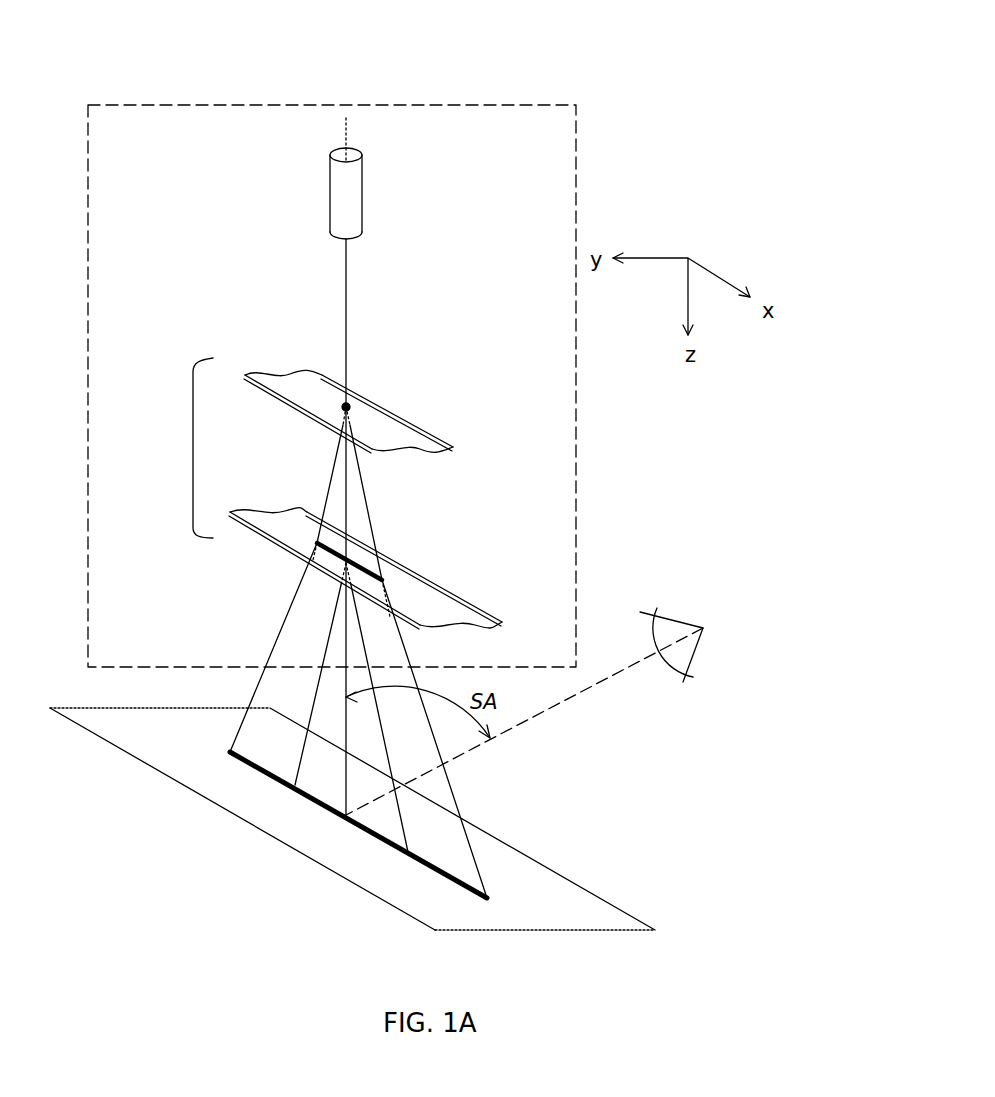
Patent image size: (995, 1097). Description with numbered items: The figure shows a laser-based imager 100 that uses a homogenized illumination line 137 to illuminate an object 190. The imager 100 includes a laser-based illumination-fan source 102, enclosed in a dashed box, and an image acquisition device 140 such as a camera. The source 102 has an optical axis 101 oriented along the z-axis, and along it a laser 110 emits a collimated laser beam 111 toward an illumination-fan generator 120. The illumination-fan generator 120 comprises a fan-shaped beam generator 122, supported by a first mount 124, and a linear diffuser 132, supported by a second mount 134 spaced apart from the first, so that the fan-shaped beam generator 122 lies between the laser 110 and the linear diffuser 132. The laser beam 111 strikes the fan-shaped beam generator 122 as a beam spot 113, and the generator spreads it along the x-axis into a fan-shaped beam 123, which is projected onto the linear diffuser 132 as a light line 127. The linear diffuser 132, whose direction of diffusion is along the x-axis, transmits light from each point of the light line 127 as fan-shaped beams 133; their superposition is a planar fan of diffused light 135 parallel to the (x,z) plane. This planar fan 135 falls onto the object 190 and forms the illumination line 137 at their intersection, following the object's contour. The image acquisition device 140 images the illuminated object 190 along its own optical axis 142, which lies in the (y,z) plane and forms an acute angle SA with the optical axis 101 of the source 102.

The laser-based imager 100 is at (198, 80).
The laser-based illumination-fan source 102 is at (134, 136).
The optical axis 101 is at (346, 135).
The laser 110 is at (365, 188).
The collimated laser beam 111 is at (346, 307).
The beam spot 113 is at (347, 405).
The illumination-fan generator 120 is at (326, 493).
The fan-shaped beam generator 122 is at (364, 406).
The first mount 124 is at (387, 406).
The fan-shaped beam 123 is at (320, 487).
The light line 127 is at (378, 565).
The linear diffuser 132 is at (382, 568).
The second mount 134 is at (450, 590).
The fan-shaped beams 133 is at (319, 720).
The planar fan of diffused light 135 is at (242, 682).
The homogenized illumination line 137 is at (428, 862).
The image acquisition device 140 is at (667, 616).
The optical axis of the image acquisition device 142 is at (577, 697).
The object 190 is at (370, 819).